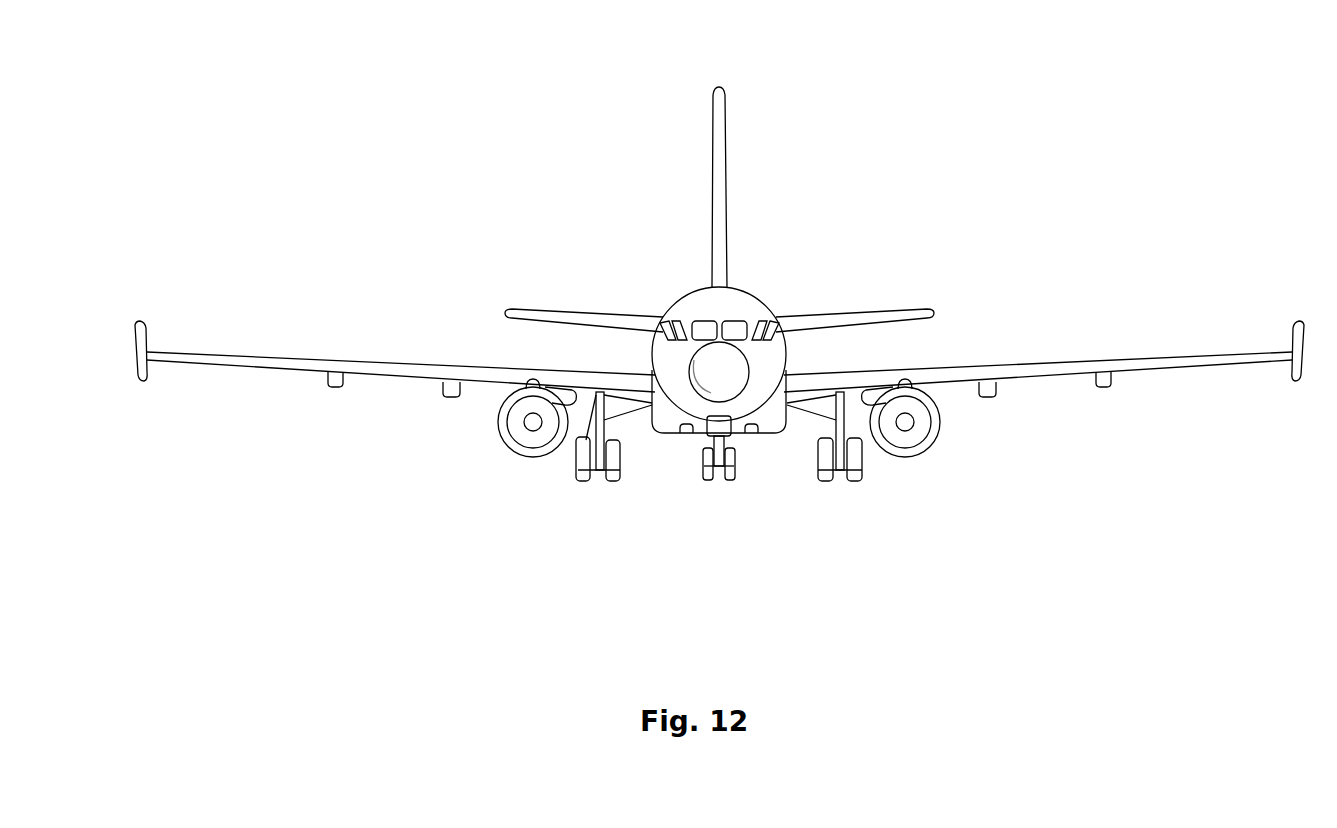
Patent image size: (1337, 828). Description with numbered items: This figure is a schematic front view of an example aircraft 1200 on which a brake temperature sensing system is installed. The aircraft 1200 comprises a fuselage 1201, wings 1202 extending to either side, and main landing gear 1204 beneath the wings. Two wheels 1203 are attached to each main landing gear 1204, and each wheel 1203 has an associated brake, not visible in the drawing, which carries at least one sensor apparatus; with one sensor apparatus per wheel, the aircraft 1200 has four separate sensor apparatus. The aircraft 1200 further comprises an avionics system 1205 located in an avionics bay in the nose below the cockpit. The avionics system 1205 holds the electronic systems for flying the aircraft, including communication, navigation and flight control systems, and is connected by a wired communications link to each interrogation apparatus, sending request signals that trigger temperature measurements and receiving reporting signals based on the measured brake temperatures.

The aircraft 1200 is at (495, 75).
The fuselage 1201 is at (745, 300).
The wings 1202 is at (940, 368).
The wheel 1203 is at (590, 395).
The main landing gear 1204 is at (604, 428).
The avionics system 1205 is at (677, 317).